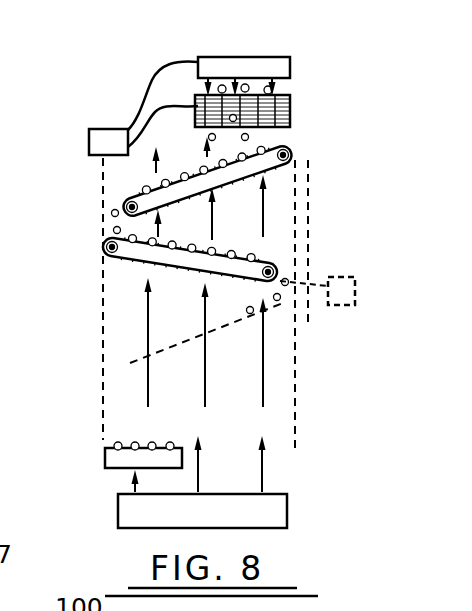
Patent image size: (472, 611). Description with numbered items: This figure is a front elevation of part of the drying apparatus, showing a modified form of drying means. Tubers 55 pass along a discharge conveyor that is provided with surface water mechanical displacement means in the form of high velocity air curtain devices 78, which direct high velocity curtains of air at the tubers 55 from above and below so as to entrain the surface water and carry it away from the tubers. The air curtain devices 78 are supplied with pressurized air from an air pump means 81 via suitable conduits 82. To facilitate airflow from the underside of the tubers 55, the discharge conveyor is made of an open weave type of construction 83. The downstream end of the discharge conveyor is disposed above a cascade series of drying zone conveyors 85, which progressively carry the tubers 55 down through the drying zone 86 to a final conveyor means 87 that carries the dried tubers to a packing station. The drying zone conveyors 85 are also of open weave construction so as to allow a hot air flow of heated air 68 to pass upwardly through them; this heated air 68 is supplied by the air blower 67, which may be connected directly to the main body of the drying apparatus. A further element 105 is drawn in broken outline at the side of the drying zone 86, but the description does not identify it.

The high velocity air curtain device 78 is at (288, 65).
The conduit 82 is at (150, 86).
The air pump means 81 is at (106, 142).
The tubers 55 is at (290, 94).
The open weave construction 83 is at (287, 123).
The drying zone conveyors 85 is at (270, 172).
The drying zone 86 is at (103, 320).
The sensor 105 is at (338, 302).
The heated air 68 is at (148, 387).
The final conveyor means 87 is at (110, 452).
The air blower 67 is at (138, 508).